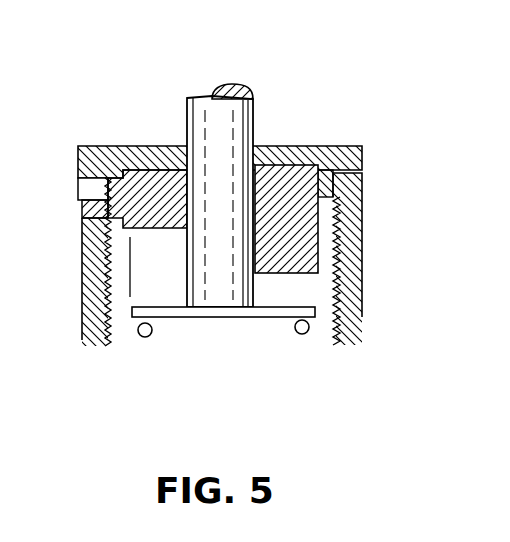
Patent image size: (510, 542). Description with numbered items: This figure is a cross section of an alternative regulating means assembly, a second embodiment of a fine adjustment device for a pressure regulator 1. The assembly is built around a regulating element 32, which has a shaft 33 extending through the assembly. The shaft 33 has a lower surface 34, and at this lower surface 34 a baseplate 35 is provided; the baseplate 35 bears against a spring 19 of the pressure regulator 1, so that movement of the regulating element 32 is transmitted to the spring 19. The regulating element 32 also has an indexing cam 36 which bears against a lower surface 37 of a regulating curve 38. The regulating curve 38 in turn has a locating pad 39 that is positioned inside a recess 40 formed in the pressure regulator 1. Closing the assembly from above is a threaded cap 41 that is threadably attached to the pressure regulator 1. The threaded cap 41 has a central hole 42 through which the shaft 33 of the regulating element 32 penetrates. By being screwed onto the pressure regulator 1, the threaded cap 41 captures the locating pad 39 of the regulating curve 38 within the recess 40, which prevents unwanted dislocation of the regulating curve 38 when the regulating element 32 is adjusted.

The pressure regulator 1 is at (363, 265).
The spring 19 is at (312, 330).
The regulating element 32 is at (227, 86).
The shaft 33 is at (253, 123).
The lower surface 34 is at (182, 303).
The baseplate 35 is at (243, 320).
The indexing cam 36 is at (158, 269).
The lower surface 37 is at (108, 211).
The regulating curve 38 is at (320, 217).
The locating pad 39 is at (83, 207).
The recess 40 is at (78, 190).
The threaded cap 41 is at (155, 147).
The central hole 42 is at (362, 153).